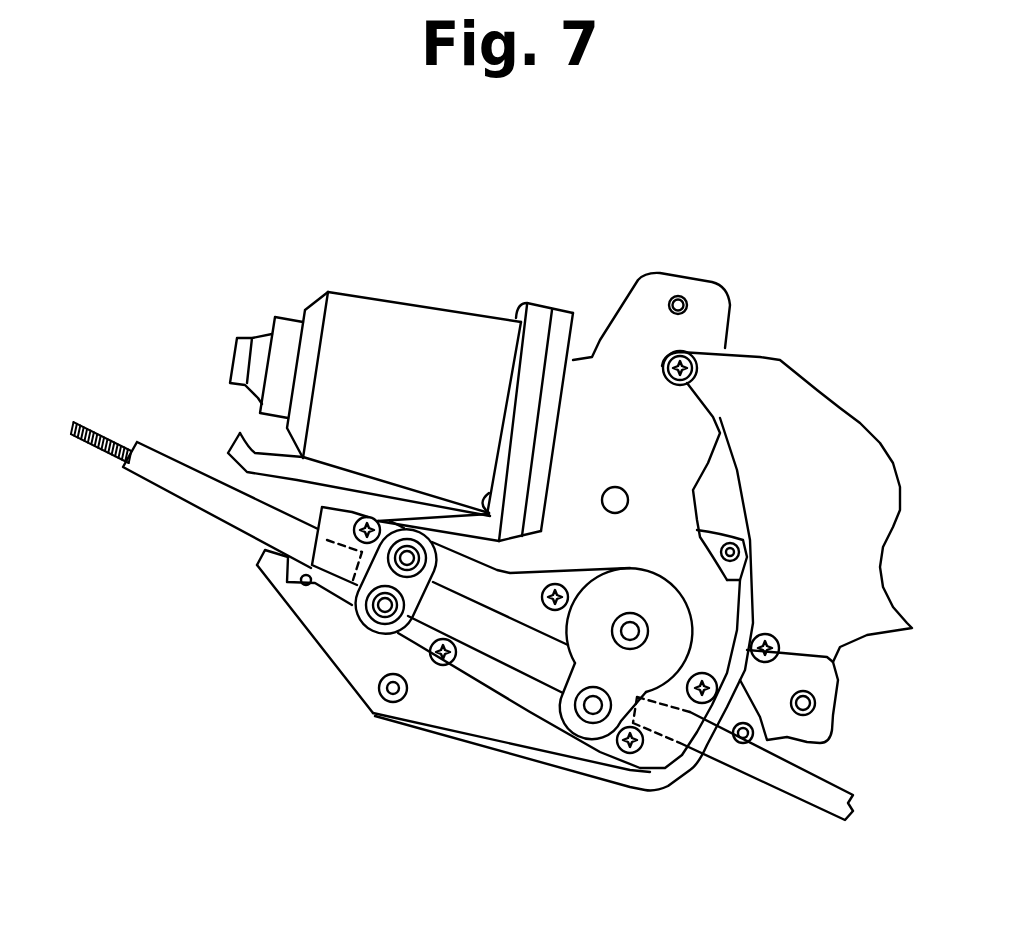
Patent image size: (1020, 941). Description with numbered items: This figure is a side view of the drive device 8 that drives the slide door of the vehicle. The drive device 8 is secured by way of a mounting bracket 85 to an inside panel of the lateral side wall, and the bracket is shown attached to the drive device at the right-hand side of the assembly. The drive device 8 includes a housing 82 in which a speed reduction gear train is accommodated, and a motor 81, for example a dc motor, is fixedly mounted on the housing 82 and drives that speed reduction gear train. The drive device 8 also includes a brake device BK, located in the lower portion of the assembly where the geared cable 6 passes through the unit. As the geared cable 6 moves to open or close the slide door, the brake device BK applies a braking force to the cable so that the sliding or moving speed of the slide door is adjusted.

The geared cable 6 is at (100, 453).
The drive device 8 is at (367, 717).
The motor 81 is at (431, 325).
The housing 82 is at (620, 332).
The mounting bracket 85 is at (810, 405).
The brake device BK is at (342, 635).